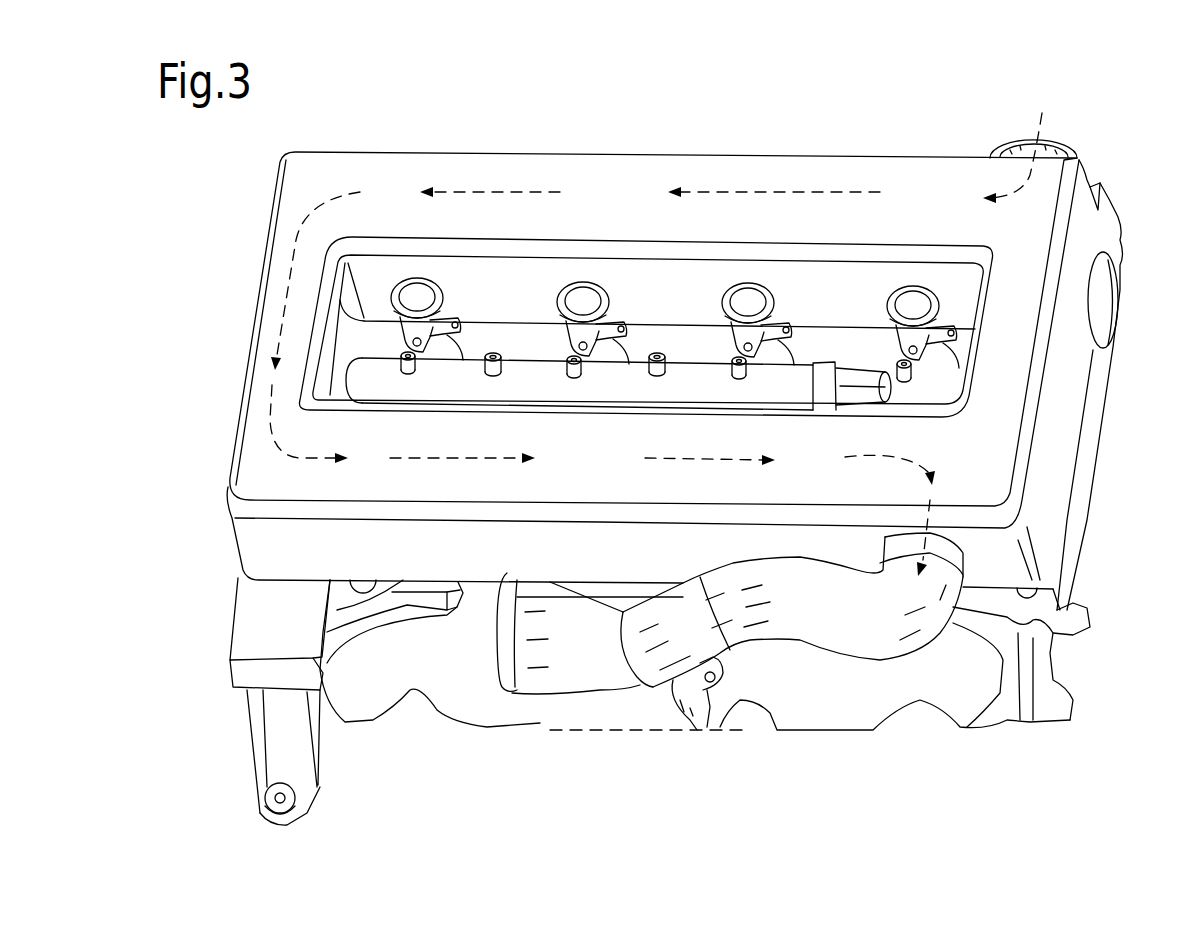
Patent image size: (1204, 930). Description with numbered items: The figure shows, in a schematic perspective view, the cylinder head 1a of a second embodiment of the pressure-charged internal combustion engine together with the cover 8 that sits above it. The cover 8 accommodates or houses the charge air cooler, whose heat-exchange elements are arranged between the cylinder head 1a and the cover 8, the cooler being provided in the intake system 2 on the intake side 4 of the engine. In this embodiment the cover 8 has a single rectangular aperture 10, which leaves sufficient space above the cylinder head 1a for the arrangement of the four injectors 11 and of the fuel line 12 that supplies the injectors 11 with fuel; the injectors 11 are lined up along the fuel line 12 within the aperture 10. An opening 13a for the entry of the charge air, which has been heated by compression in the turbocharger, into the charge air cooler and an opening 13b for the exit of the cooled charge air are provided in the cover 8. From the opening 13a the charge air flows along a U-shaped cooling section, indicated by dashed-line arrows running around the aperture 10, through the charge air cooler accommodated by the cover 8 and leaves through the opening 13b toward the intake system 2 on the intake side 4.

The cover 8 is at (413, 173).
The rectangular aperture 10 is at (670, 307).
The injectors 11 is at (418, 300).
The fuel line 12 is at (632, 392).
The opening for the entry of the charge air 13a is at (1035, 145).
The opening for the exit of the cooled charge air 13b is at (963, 553).
The cylinder head 1a is at (1095, 460).
The intake system 2 is at (800, 613).
The intake side 4 is at (577, 187).